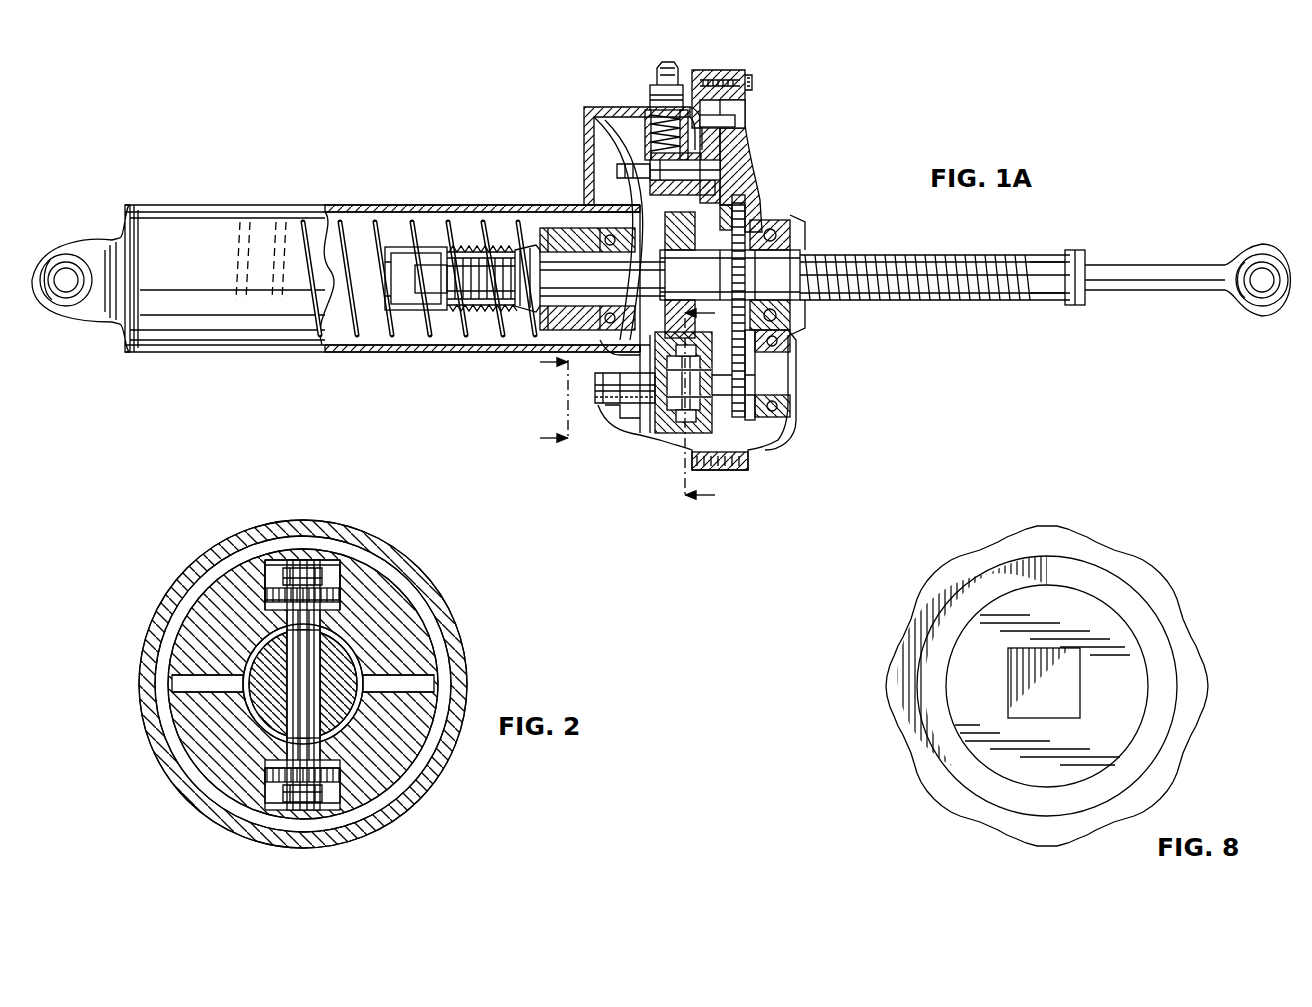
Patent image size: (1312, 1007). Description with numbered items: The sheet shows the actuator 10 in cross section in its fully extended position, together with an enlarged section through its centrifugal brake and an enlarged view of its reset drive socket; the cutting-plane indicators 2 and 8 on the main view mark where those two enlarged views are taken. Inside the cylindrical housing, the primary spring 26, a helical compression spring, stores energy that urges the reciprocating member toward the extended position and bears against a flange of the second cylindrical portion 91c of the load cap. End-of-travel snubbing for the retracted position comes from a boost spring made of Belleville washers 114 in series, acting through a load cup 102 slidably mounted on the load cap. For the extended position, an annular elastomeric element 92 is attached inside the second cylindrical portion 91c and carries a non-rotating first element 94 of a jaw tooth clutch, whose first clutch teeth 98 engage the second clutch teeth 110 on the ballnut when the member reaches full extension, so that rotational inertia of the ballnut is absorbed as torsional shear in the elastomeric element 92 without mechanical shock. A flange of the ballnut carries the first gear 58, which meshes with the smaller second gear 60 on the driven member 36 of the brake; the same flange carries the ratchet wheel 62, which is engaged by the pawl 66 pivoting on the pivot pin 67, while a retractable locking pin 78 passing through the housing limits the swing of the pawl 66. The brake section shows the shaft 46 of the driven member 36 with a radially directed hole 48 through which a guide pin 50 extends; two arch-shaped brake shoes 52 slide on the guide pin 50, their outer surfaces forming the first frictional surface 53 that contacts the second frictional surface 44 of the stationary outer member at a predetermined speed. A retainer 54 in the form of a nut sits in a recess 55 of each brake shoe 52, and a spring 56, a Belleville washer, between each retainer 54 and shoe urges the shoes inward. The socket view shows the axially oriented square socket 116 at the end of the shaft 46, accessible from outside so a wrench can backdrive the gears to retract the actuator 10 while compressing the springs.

In FIG. 1A, the actuator 10 is at (609, 80).
In FIG. 1A, the primary spring 26 is at (348, 212).
In FIG. 1A, the load cup 102 is at (388, 247).
In FIG. 1A, the elastomeric element 92 is at (520, 245).
In FIG. 1A, the Belleville washers 114 is at (470, 305).
In FIG. 1A, the second cylindrical portion 91c is at (510, 312).
In FIG. 1A, the first clutch teeth 98 is at (612, 228).
In FIG. 1A, the second clutch teeth 110 is at (632, 228).
In FIG. 1A, the pawl 66 is at (742, 145).
In FIG. 1A, the pivot pin 67 is at (742, 118).
In FIG. 1A, the locking pin 78 is at (742, 170).
In FIG. 1A, the first gear 58 is at (748, 222).
In FIG. 1A, the ratchet wheel 62 is at (728, 242).
In FIG. 1A, the brake shoes 52 is at (757, 348).
In FIG. 2, the brake shoes 52 is at (405, 647).
In FIG. 1A, the second gear 60 is at (775, 432).
In FIG. 1A, the shaft 46 is at (600, 407).
In FIG. 2, the shaft 46 is at (258, 705).
In FIG. 8, the shaft 46 is at (1135, 698).
In FIG. 1A, the first element of jaw tooth clutch 94 is at (625, 410).
In FIG. 1A, the section line 8- 8 is at (543, 403).
In FIG. 1A, the section line 2- 2 is at (688, 408).
In FIG. 2, the first frictional surface 53 is at (230, 565).
In FIG. 2, the second frictional surface 44 is at (432, 620).
In FIG. 2, the driven member 36 is at (396, 583).
In FIG. 8, the driven member 36 is at (1163, 618).
In FIG. 2, the hole 48 is at (285, 732).
In FIG. 2, the guide pin 50 is at (300, 752).
In FIG. 2, the retainer 54 is at (300, 568).
In FIG. 2, the recess 55 is at (280, 565).
In FIG. 2, the spring 56 is at (330, 580).
In FIG. 8, the square socket 116 is at (1068, 705).